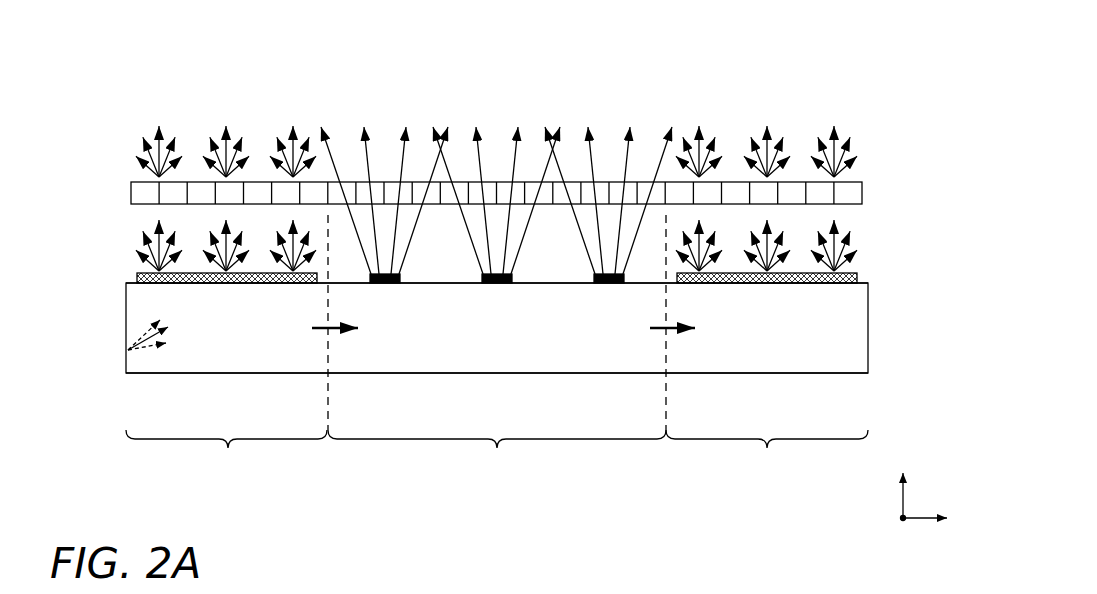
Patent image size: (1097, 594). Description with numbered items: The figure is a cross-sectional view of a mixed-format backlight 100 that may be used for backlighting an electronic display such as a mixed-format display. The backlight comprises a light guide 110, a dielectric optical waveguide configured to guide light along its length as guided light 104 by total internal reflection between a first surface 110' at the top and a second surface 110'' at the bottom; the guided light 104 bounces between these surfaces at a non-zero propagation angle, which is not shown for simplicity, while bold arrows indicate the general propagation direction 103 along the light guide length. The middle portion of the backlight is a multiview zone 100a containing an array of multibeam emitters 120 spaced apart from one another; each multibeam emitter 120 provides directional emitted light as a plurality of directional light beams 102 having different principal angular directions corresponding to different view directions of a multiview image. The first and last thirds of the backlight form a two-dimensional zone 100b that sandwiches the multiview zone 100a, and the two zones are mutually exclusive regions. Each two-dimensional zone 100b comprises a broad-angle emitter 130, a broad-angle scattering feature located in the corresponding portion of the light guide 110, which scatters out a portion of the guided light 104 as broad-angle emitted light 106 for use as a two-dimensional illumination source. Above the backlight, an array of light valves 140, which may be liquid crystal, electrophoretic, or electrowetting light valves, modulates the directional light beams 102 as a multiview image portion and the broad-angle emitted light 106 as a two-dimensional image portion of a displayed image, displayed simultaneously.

The mixed-format backlight 100 is at (837, 54).
The multiview zone 100a is at (497, 462).
The 2D zone 100b is at (497, 462).
The directional light beams 102 is at (589, 111).
The propagation direction 103 is at (341, 348).
The guided light 104 is at (151, 361).
The broad-angle emitted light 106 is at (216, 125).
The light guide 110 is at (543, 328).
The first surface 110' is at (542, 263).
The second surface 110'' is at (546, 395).
The multibeam emitters 120 is at (387, 283).
The broad-angle emitter 130 is at (227, 283).
The light valves 140 is at (126, 191).